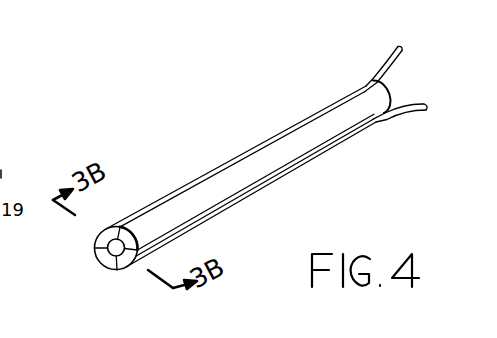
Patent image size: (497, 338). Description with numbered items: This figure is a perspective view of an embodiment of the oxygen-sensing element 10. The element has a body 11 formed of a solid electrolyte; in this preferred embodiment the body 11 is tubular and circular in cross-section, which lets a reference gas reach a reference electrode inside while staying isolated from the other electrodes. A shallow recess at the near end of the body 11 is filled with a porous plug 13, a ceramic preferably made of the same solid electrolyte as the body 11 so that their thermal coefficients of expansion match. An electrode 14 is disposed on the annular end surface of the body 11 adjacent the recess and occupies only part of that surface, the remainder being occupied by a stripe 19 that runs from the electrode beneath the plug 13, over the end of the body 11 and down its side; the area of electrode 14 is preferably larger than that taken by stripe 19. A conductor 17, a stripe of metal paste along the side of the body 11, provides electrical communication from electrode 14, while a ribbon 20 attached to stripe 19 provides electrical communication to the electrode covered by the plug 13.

The oxygen-sensing element 10 is at (386, 57).
The body 11 is at (373, 108).
The porous plug 13 is at (114, 252).
The electrode 14 is at (95, 248).
The conductor 17 is at (133, 212).
The stripe 19 is at (289, 178).
The ribbon 20 is at (421, 112).